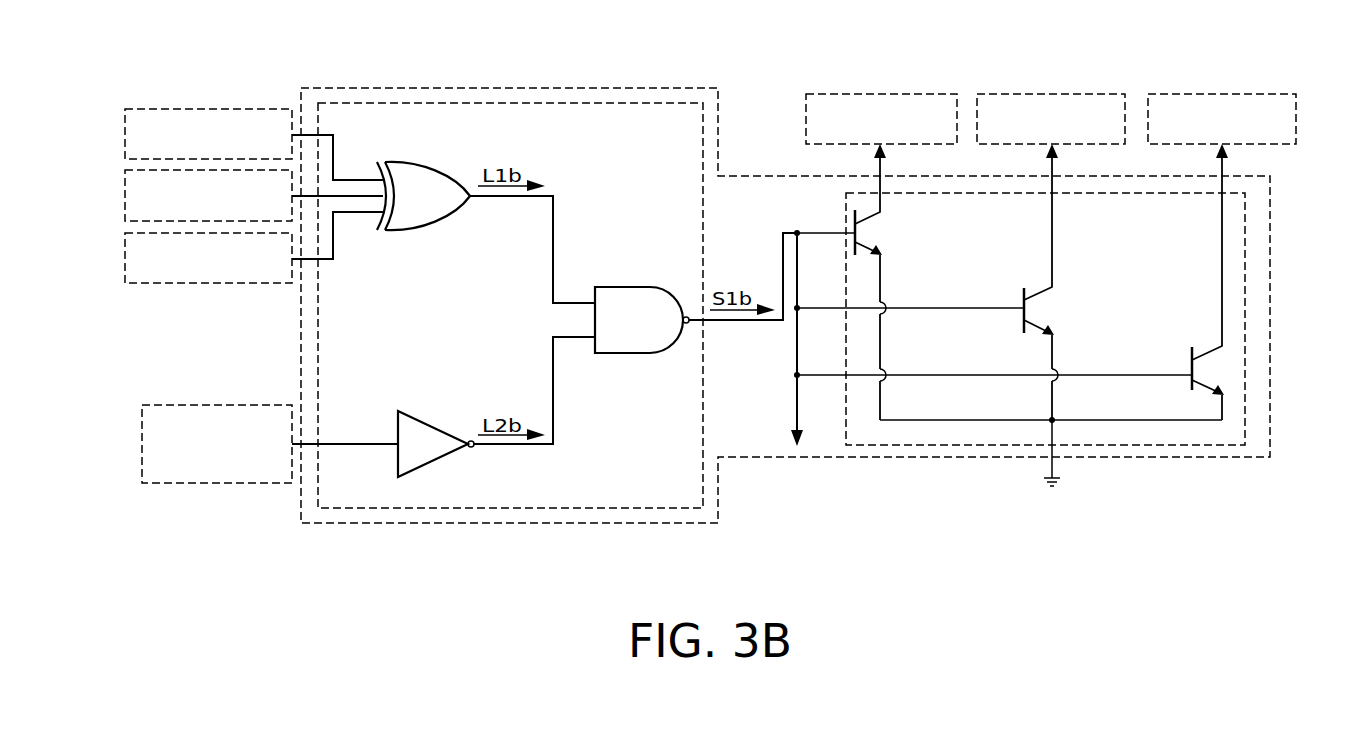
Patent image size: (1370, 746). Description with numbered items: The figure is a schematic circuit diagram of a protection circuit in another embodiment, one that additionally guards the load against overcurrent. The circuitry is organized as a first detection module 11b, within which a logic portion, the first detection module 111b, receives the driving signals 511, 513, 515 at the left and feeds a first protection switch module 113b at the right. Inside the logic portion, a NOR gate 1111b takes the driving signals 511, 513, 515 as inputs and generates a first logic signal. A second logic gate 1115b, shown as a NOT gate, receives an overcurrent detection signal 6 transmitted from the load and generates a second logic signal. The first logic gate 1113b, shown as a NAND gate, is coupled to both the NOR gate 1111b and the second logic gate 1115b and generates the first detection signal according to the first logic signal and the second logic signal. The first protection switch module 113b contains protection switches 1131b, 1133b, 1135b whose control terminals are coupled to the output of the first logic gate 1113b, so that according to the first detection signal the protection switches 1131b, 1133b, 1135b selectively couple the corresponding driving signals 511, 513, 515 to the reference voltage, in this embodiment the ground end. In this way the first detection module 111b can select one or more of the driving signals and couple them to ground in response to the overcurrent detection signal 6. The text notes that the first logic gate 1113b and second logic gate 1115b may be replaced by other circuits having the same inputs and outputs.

The first detection module 11b is at (430, 88).
The first detection module 111b is at (633, 103).
The first protection switch module 113b is at (1248, 245).
The driving signal 511 is at (125, 131).
The driving signal 513 is at (125, 193).
The driving signal 515 is at (125, 255).
The overcurrent detection signal 6 is at (216, 405).
The NOR gate 1111b is at (431, 162).
The first logic gate 1113b is at (622, 287).
The second logic gate 1115b is at (437, 411).
The protection switch 1131b is at (887, 242).
The protection switch 1133b is at (1055, 303).
The protection switch 1135b is at (1224, 366).